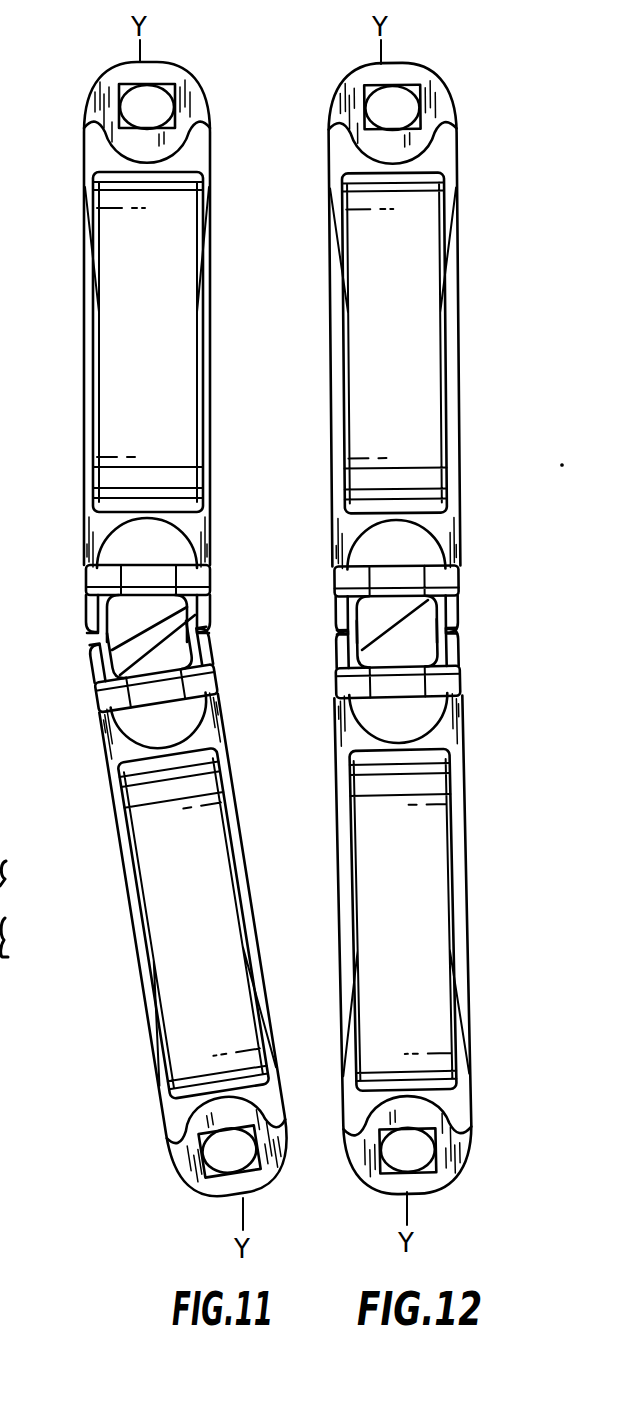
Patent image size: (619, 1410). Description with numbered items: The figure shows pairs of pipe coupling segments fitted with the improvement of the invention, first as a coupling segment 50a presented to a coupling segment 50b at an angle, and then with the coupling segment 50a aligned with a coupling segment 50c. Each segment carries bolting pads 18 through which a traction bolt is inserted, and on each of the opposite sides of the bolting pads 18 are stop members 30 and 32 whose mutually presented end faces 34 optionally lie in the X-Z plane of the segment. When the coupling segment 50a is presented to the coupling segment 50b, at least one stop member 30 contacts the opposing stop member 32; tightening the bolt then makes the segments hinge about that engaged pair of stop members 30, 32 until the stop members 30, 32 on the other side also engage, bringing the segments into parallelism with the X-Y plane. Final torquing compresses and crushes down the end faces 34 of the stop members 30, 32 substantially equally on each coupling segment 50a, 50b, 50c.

In FIG. 11, the bolting pad 18 is at (200, 572).
In FIG. 12, the bolting pad 18 is at (440, 582).
In FIG. 11, the stop member 30 is at (208, 617).
In FIG. 12, the stop member 30 is at (445, 615).
In FIG. 11, the stop member 32 is at (97, 612).
In FIG. 12, the stop member 32 is at (340, 615).
In FIG. 11, the end face 34 is at (90, 638).
In FIG. 12, the end face 34 is at (460, 630).
In FIG. 11, the coupling segment 50a is at (177, 383).
In FIG. 12, the coupling segment 50a is at (425, 383).
In FIG. 11, the coupling segment 50b is at (240, 935).
In FIG. 12, the coupling segment 50c is at (440, 952).